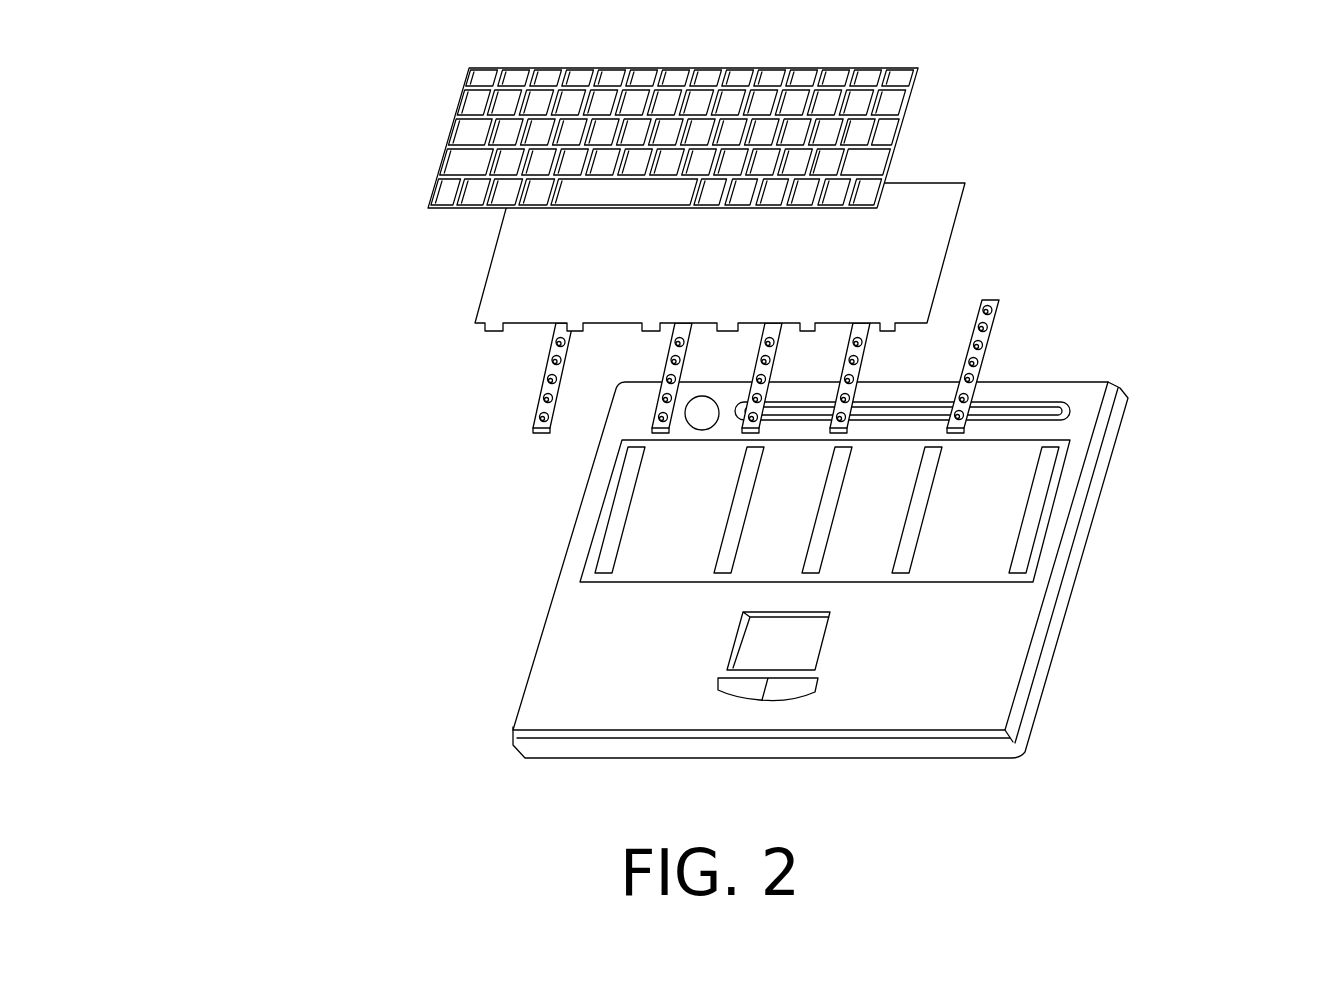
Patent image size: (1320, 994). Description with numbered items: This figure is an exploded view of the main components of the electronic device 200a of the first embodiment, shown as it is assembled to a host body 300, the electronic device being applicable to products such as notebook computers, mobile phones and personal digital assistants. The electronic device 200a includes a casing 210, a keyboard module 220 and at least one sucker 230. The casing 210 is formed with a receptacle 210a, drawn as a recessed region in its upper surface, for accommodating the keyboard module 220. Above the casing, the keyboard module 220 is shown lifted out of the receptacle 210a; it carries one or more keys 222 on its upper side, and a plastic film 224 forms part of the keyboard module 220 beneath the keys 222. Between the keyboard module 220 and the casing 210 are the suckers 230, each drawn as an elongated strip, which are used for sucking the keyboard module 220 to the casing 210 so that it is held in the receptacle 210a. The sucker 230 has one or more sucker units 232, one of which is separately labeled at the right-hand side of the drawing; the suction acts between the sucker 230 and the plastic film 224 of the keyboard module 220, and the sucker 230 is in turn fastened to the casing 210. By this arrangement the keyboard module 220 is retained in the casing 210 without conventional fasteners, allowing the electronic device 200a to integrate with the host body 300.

The electronic device 200a is at (325, 203).
The casing 210 is at (791, 570).
The receptacle 210a is at (990, 527).
The keyboard module 220 is at (707, 199).
The keys 222 is at (883, 132).
The plastic film 224 is at (945, 207).
The sucker 230 is at (543, 405).
The sucker unit 232 is at (990, 300).
The host body 300 is at (1082, 698).